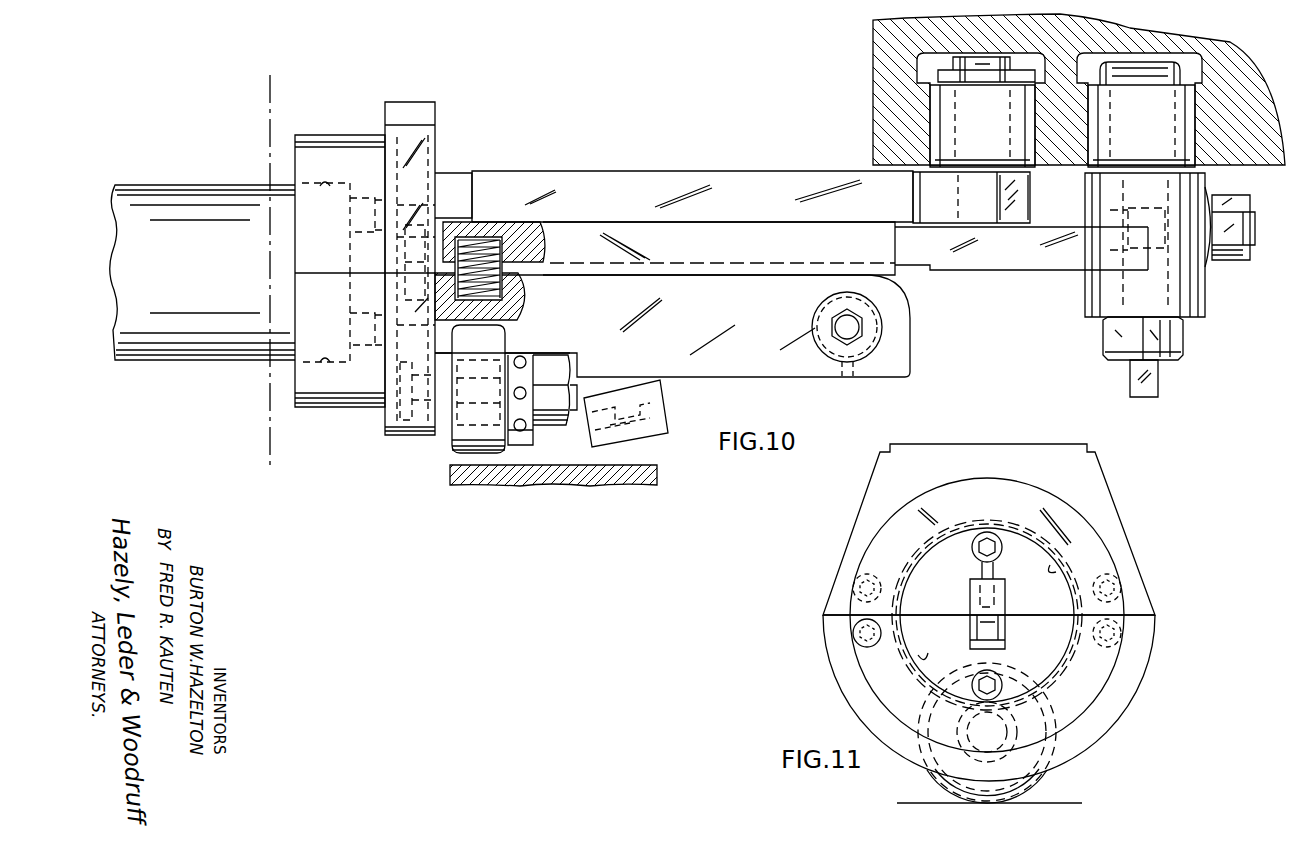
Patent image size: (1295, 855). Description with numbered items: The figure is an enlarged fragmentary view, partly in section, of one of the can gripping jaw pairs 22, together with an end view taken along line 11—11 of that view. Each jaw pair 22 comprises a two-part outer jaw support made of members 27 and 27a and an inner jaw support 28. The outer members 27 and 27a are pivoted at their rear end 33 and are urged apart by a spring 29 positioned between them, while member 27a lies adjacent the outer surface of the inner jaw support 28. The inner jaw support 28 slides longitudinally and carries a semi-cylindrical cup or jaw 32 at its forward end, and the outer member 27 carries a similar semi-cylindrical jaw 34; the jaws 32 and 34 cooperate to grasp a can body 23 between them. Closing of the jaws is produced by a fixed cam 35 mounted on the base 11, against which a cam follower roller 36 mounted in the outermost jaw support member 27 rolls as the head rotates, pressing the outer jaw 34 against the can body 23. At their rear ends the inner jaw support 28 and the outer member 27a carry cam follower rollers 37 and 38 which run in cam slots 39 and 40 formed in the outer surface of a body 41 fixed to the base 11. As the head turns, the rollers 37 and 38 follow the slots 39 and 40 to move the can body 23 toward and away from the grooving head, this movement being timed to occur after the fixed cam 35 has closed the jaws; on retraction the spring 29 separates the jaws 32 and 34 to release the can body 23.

In FIG. 10, the base 11 is at (256, 96).
In FIG. 10, the pair of jaws 22 is at (655, 165).
In FIG. 11, the pair of jaws 22 is at (1110, 481).
In FIG. 10, the can body 23 is at (194, 267).
In FIG. 11, the can body 23 is at (916, 569).
In FIG. 10, the outer jaw support member 27 is at (578, 375).
In FIG. 11, the outer jaw support member 27 is at (1117, 703).
In FIG. 10, the outer jaw support member 27a is at (588, 250).
In FIG. 10, the inner jaw support 28 is at (584, 177).
In FIG. 11, the inner jaw support 28 is at (857, 518).
In FIG. 10, the spring 29 is at (484, 240).
In FIG. 10, the semi-cylindrical cup or jaw 32 is at (316, 170).
In FIG. 11, the semi-cylindrical cup or jaw 32 is at (1058, 568).
In FIG. 10, the rear end pivot 33 is at (855, 330).
In FIG. 10, the semi-cylindrical cup or jaw 34 is at (343, 368).
In FIG. 11, the semi-cylindrical cup or jaw 34 is at (925, 655).
In FIG. 10, the fixed cam 35 is at (548, 482).
In FIG. 11, the fixed cam 35 is at (913, 802).
In FIG. 10, the cam follower roller 36 is at (448, 452).
In FIG. 11, the cam follower roller 36 is at (1046, 782).
In FIG. 10, the cam follower roller 37 is at (983, 124).
In FIG. 10, the cam follower roller 38 is at (1143, 128).
In FIG. 10, the cam slot 39 is at (930, 125).
In FIG. 10, the cam slot 40 is at (1187, 110).
In FIG. 10, the body 41 is at (873, 43).